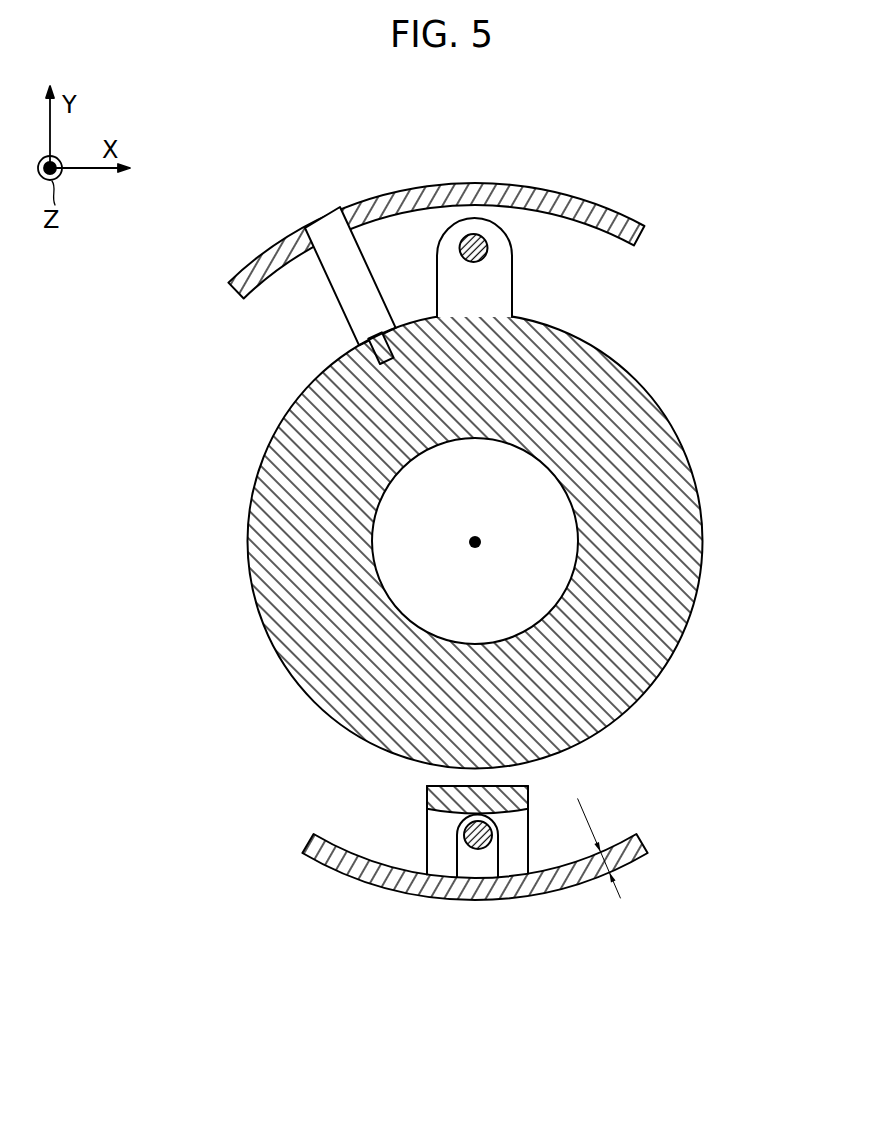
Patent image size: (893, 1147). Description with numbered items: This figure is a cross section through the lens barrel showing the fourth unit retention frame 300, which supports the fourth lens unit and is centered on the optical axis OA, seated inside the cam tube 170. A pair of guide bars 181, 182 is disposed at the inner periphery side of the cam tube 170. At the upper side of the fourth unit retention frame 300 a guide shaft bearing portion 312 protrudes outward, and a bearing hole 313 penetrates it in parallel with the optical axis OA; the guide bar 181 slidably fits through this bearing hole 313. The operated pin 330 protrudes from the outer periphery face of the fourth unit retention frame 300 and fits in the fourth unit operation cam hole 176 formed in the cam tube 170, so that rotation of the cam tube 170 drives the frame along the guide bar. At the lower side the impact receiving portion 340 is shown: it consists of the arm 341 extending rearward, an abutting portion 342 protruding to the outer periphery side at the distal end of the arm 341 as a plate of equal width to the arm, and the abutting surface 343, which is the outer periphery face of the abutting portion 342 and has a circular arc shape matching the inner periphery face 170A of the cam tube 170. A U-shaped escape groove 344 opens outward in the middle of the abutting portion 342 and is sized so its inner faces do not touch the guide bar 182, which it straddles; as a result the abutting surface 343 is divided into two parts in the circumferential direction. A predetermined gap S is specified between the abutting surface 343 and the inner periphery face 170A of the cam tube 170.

The cam tube 170 is at (610, 208).
The inner periphery face 170A is at (405, 873).
The fourth unit operation cam hole 176 is at (345, 226).
The guide bar 181 is at (484, 258).
The guide bar 182 is at (464, 835).
The fourth unit retention frame 300 is at (655, 400).
The guide shaft bearing portion 312 is at (436, 247).
The bearing hole 313 is at (474, 238).
The operated pin 330 is at (327, 287).
The impact receiving portion 340 is at (513, 906).
The arm 341 is at (529, 847).
The abutting portion 342 is at (440, 842).
The abutting surface 343 is at (498, 928).
The escape groove 344 is at (481, 860).
The optical axis OA is at (475, 542).
The gap S is at (603, 848).